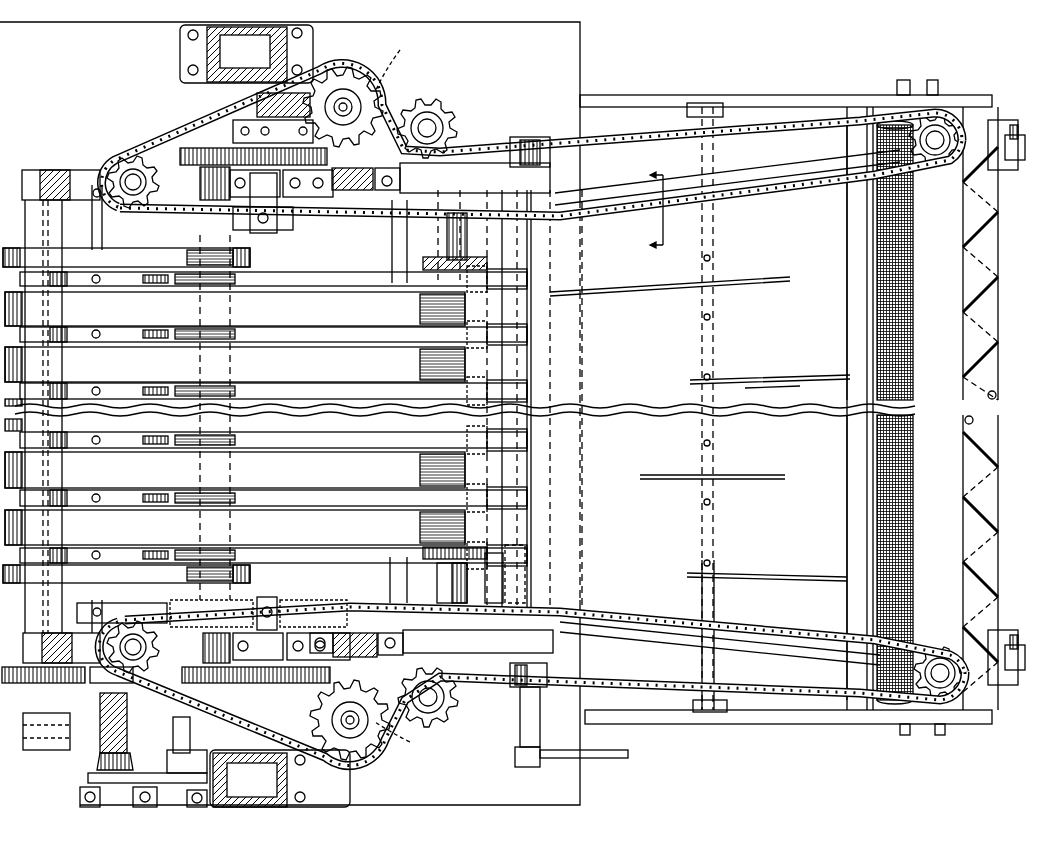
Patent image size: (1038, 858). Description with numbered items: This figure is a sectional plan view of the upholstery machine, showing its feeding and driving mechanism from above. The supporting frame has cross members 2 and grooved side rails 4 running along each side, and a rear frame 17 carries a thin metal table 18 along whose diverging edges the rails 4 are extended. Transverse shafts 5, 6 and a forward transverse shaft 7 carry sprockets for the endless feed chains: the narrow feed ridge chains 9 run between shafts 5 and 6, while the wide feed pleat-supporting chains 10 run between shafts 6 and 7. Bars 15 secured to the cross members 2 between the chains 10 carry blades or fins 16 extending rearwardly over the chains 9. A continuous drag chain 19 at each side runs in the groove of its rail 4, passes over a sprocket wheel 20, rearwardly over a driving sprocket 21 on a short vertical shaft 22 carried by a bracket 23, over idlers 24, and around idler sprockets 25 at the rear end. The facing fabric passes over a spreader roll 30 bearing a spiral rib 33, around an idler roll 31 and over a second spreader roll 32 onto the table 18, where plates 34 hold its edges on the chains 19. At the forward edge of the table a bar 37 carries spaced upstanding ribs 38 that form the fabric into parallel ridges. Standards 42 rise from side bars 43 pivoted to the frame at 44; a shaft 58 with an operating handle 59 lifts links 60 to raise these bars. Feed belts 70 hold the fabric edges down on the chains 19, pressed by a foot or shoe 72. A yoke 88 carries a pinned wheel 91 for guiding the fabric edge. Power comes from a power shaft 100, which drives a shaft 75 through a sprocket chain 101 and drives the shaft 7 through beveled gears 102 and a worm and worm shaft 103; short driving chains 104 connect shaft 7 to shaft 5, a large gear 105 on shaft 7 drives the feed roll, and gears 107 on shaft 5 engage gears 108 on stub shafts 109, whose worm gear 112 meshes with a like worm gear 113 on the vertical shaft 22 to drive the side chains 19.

The cross members 2 is at (300, 580).
The grooved side rails 4 is at (485, 225).
The transverse shaft 5 is at (200, 528).
The transverse shaft 6 is at (437, 583).
The forward transverse shaft 7 is at (25, 623).
The feed ridge chains 9 is at (341, 275).
The feed pleat-supporting chains 10 is at (235, 418).
The bars 15 is at (110, 552).
The blade or fin 16 is at (145, 388).
The frame 17 is at (780, 95).
The table 18 is at (779, 505).
The drag chain 19 is at (165, 140).
The sprocket wheel 20 is at (110, 172).
The driving sprocket 21 is at (350, 100).
The vertical shaft 22 is at (371, 409).
The bracket 23 is at (395, 118).
The idlers 24 is at (435, 112).
The idler sprockets 25 is at (948, 160).
The spreader roll 30 is at (966, 408).
The idler roll 31 is at (847, 548).
The second spreader roll 32 is at (913, 566).
The spirally arranged rib 33 is at (970, 450).
The plates 34 is at (753, 175).
The bar 37 is at (513, 583).
The upstanding ribs 38 is at (512, 310).
The standards 42 is at (360, 178).
The side bars 43 is at (497, 165).
The pivot 44 is at (200, 190).
The shaft 58 is at (520, 745).
The operating handle 59 is at (603, 758).
The links 60 is at (548, 672).
The feed belts 70 is at (122, 613).
The foot or shoe 72 is at (285, 225).
The shaft 75 is at (173, 740).
The yoke 88 is at (1006, 406).
The wheel 91 is at (1014, 165).
The power shaft 100 is at (127, 735).
The sprocket chain 101 is at (167, 760).
The beveled gears 102 is at (97, 766).
The worm and worm shaft 103 is at (45, 750).
The short driving chains 104 is at (126, 415).
The large gear 105 is at (20, 667).
The gears 107 is at (185, 140).
The gears 108 is at (327, 155).
The stub shafts 109 is at (260, 105).
The worm gear 112 is at (265, 416).
The worm gear 113 is at (395, 760).